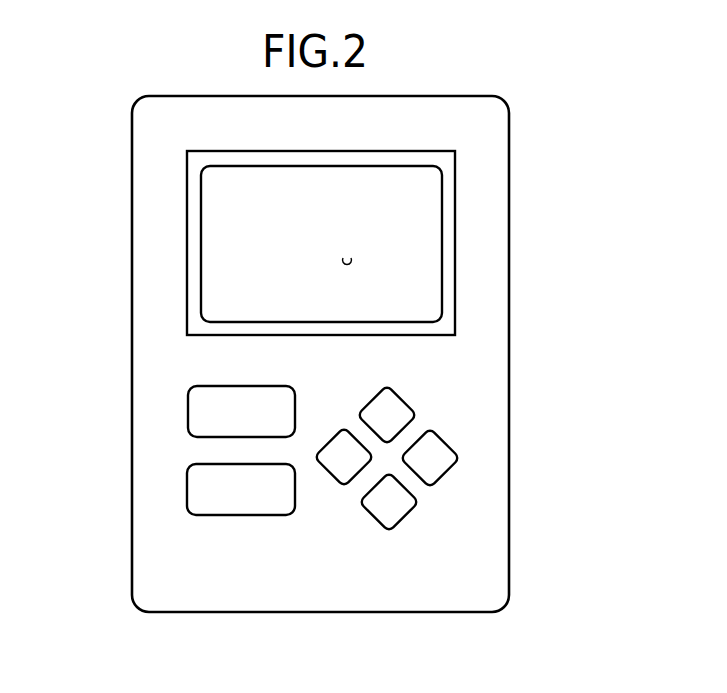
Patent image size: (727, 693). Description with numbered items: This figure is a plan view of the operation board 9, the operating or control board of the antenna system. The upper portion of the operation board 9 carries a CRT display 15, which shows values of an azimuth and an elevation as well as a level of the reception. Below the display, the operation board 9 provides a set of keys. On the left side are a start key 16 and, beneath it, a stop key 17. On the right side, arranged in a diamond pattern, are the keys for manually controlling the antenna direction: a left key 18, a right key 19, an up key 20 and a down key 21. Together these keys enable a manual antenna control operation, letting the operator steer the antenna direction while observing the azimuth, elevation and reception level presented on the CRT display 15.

The operation board 9 is at (113, 292).
The CRT display 15 is at (423, 260).
The start key 16 is at (214, 394).
The stop key 17 is at (248, 508).
The left key 18 is at (342, 478).
The right key 19 is at (447, 450).
The up key 20 is at (405, 402).
The down key 21 is at (403, 510).